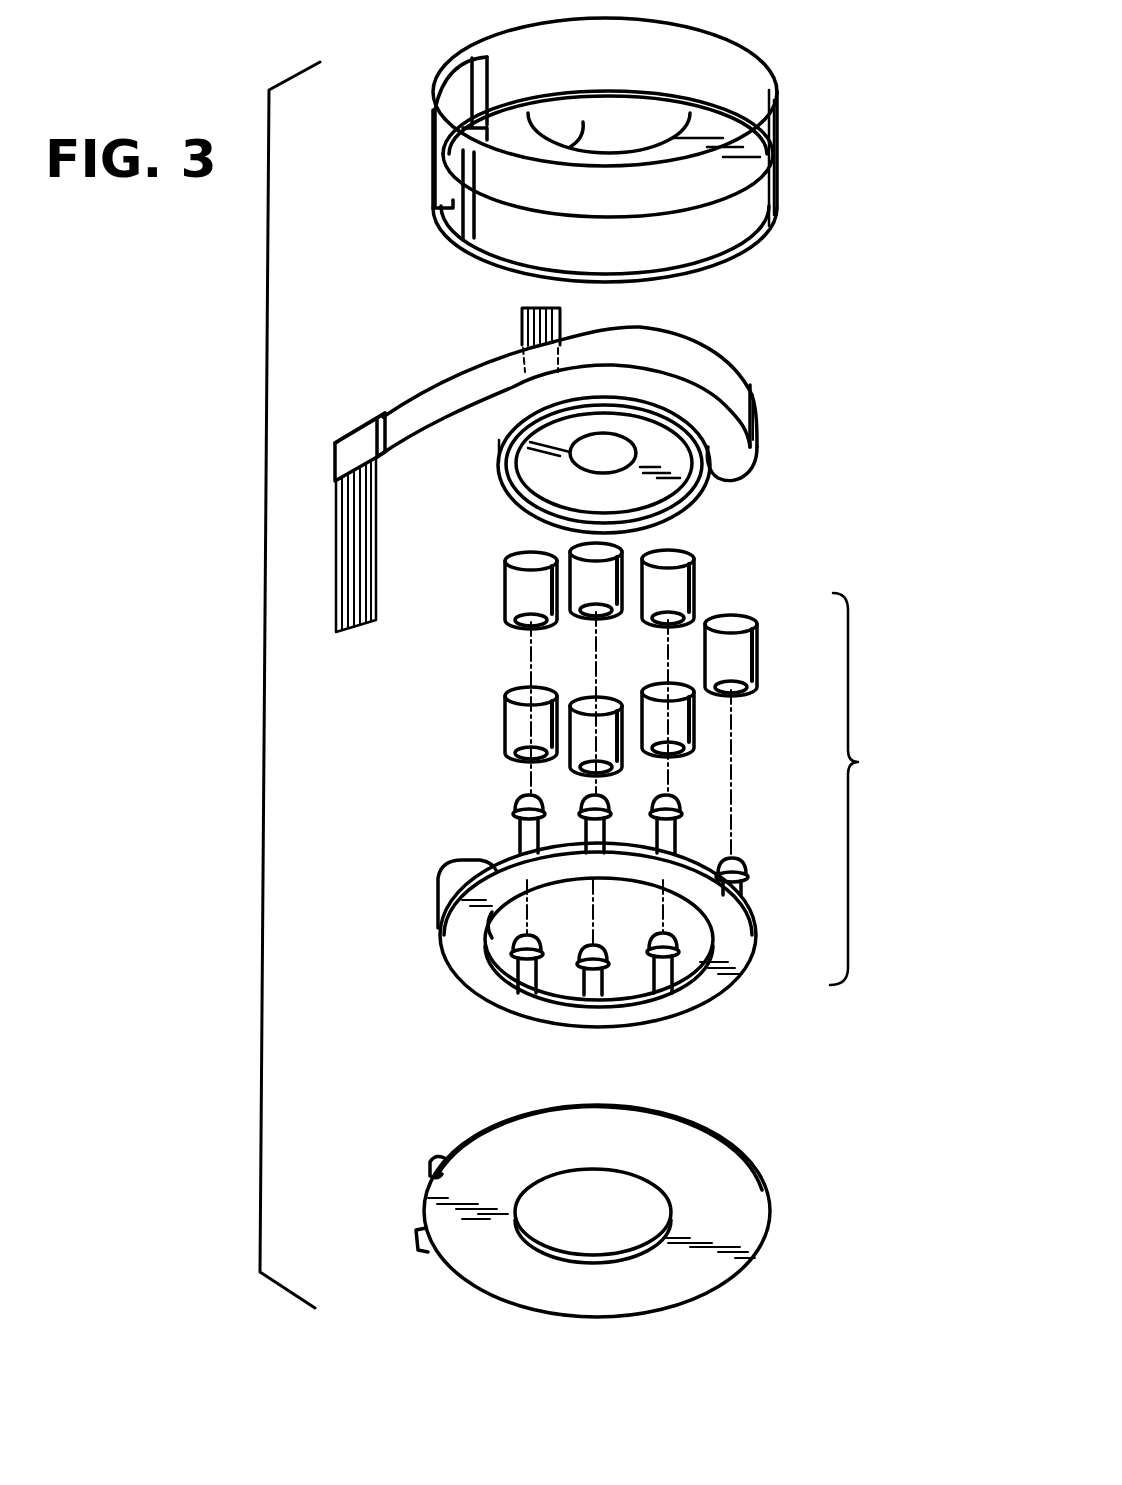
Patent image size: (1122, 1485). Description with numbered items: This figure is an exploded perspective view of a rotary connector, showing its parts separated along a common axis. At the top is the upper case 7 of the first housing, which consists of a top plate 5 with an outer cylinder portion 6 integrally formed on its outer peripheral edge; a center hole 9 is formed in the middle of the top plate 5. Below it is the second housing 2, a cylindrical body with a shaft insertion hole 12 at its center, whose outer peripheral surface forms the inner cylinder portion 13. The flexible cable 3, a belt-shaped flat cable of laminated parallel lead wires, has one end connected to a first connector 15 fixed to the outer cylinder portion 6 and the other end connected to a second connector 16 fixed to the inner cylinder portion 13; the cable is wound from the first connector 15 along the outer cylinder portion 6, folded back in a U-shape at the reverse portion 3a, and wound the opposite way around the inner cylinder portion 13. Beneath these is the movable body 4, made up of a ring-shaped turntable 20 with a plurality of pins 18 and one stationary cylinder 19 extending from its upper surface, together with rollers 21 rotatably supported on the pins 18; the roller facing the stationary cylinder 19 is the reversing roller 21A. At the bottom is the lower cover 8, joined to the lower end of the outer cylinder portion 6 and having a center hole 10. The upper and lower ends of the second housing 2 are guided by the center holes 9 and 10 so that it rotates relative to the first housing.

The second housing 2 is at (507, 493).
The flexible cable 3 is at (433, 387).
The reverse portion 3a is at (737, 460).
The movable body 4 is at (906, 788).
The top plate 5 is at (680, 183).
The outer cylinder portion 6 is at (737, 80).
The upper case 7 is at (777, 197).
The lower cover 8 is at (708, 1132).
The center hole 9 is at (500, 155).
The center hole 10 is at (642, 1207).
The shaft insertion hole 12 is at (610, 458).
The inner cylinder portion 13 is at (496, 452).
The first connector 15 is at (357, 437).
The second connector 16 is at (513, 370).
The pins 18 is at (512, 837).
The stationary cylinder 19 is at (455, 870).
The turntable 20 is at (478, 975).
The rollers 21 is at (510, 612).
The reversing roller 21A is at (515, 723).